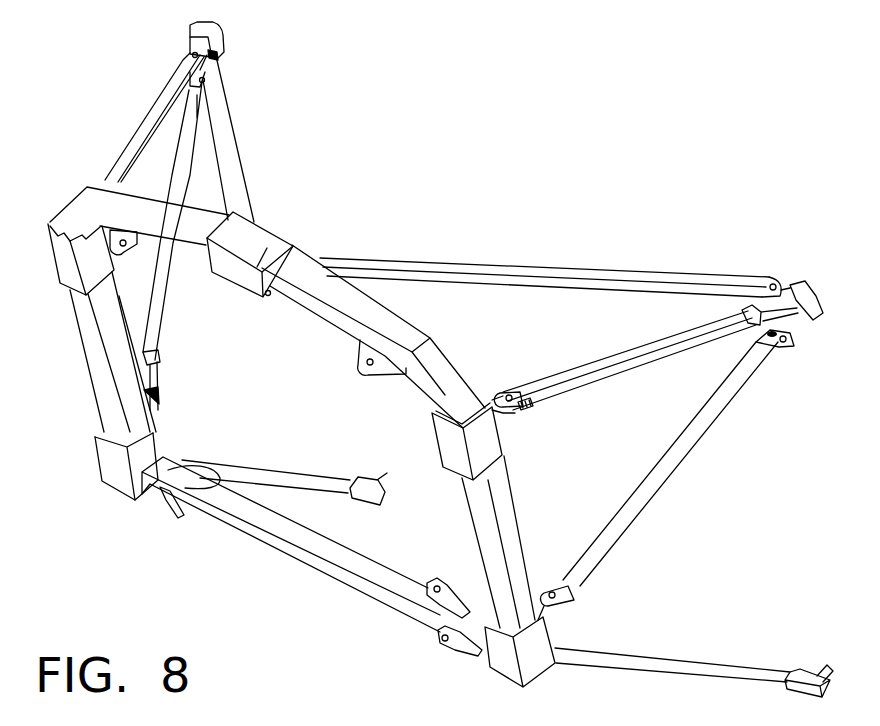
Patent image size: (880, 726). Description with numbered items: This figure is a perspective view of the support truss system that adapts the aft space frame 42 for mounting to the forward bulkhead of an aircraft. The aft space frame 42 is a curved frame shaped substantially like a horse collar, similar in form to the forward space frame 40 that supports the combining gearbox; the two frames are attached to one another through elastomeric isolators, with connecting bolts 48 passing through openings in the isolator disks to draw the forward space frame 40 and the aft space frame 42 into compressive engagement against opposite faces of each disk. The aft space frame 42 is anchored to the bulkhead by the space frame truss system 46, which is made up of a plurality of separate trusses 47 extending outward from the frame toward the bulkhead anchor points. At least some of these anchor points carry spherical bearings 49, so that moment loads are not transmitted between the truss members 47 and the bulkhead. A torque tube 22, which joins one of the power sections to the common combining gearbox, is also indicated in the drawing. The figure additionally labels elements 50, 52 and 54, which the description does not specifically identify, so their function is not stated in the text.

The torque tube 22 is at (493, 415).
The forward space frame 40 is at (250, 240).
The aft space frame 42 is at (368, 310).
The space frame truss system 46 is at (488, 133).
The trusses 47 is at (148, 123).
The connecting bolts 48 is at (507, 540).
The spherical bearings 49 is at (825, 675).
The left post 50 is at (100, 360).
The lug 52 is at (547, 617).
The brace bar 54 is at (610, 373).